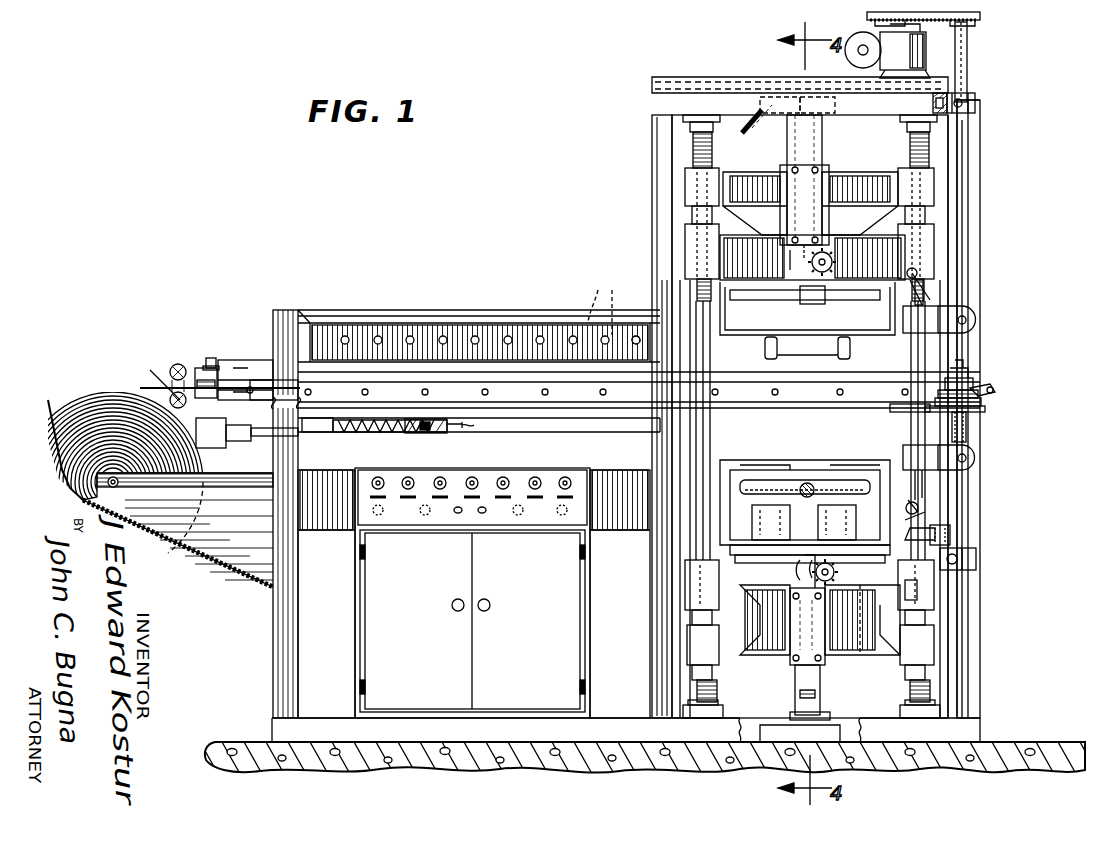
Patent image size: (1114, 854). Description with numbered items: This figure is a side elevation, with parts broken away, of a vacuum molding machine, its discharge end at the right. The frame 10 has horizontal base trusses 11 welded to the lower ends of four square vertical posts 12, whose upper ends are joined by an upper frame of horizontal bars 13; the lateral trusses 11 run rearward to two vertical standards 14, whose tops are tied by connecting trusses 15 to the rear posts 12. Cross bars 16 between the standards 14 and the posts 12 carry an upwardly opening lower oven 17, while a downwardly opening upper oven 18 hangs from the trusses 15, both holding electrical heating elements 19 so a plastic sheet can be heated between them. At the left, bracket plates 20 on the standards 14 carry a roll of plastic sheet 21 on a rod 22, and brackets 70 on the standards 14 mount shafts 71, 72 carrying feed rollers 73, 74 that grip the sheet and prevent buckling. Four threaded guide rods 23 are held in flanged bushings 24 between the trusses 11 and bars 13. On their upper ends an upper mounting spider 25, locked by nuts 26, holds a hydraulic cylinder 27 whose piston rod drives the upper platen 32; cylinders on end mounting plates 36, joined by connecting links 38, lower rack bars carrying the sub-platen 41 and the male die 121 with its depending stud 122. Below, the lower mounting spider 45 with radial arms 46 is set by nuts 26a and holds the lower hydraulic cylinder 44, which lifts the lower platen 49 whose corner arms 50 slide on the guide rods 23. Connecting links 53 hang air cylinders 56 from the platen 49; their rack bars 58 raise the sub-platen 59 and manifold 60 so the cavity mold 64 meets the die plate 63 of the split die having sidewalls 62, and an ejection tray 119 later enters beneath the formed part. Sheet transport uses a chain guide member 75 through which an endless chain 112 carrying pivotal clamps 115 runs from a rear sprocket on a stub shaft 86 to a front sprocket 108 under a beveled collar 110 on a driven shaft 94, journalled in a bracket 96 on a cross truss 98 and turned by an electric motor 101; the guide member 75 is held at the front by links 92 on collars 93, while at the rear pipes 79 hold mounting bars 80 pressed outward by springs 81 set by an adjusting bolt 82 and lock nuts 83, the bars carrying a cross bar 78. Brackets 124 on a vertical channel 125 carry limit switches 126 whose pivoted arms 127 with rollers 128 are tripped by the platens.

The frame 10 is at (318, 662).
The horizontal base connectors or trusses 11 is at (628, 728).
The vertical posts 12 is at (665, 185).
The horizontal bars 13 is at (730, 106).
The vertical standards 14 is at (274, 694).
The horizontal connecting trusses 15 is at (551, 322).
The cross bars 16 is at (327, 535).
The lower oven 17 is at (630, 531).
The upper oven 18 is at (425, 322).
The electrical heating elements 19 is at (437, 393).
The recessed bracket plates 20 is at (213, 545).
The rolls of plastic film or plastic sheets 21 is at (72, 408).
The rod 22 is at (90, 482).
The guide rods 23 is at (717, 690).
The flanged metal bushings 24 is at (683, 126).
The upper mounting frame or spider 25 is at (880, 140).
The nuts 26 is at (685, 172).
The adjustable nuts 26a is at (692, 616).
The hydraulic cylinder 27 is at (777, 143).
The upper platen 32 is at (898, 256).
The end mounting plates 36 is at (800, 194).
The metal connecting links 38 is at (806, 156).
The guide supporting plate or sub-platen 41 is at (855, 302).
The lower hydraulic cylinder 44 is at (780, 655).
The lower mounting spider 45 is at (863, 655).
The radial arms 46 is at (687, 646).
The lower platen 49 is at (878, 598).
The corner arms 50 is at (690, 580).
The connecting links 53 is at (795, 638).
The air cylinders 56 is at (822, 684).
The rack bars 58 is at (802, 566).
The sub-platen 59 is at (958, 542).
The manifold 60 is at (877, 484).
The vertical sidewall of die 62 is at (722, 475).
The upper passaged wall or die plate 63 is at (836, 466).
The cavity mold 64 is at (765, 448).
The brackets 70 is at (242, 360).
The shaft 71 is at (154, 370).
The shaft 72 is at (190, 368).
The feed roller 73 is at (174, 366).
The feed roller 74 is at (150, 388).
The chain guide and guard member 75 is at (506, 417).
The transverse horizontal bar 78 is at (273, 372).
The horizontal pipes 79 is at (327, 433).
The mounting bars 80 is at (262, 441).
The expansion springs 81 is at (358, 432).
The adjusting bolt 82 is at (466, 426).
The lock nuts 83 is at (439, 433).
The vertical stub shaft 86 is at (212, 358).
The passaged links 92 is at (890, 412).
The collars 93 is at (968, 424).
The vertical driven shaft 94 is at (968, 61).
The bracket 96 is at (973, 105).
The horizontal cross truss 98 is at (946, 98).
The electric motor 101 is at (926, 48).
The sprocket 108 is at (976, 398).
The beveled collar 110 is at (966, 377).
The endless link chain 112 is at (985, 407).
The pivotal metal clamps 115 is at (993, 389).
The ejection and delivery tray 119 is at (805, 486).
The male die 121 is at (765, 348).
The depending stud 122 is at (807, 357).
The horizontal brackets 124 is at (966, 321).
The vertical channel 125 is at (972, 605).
The electrical stop control or limit switch 126 is at (938, 311).
The pivoted metal arm 127 is at (926, 290).
The roller 128 is at (928, 510).